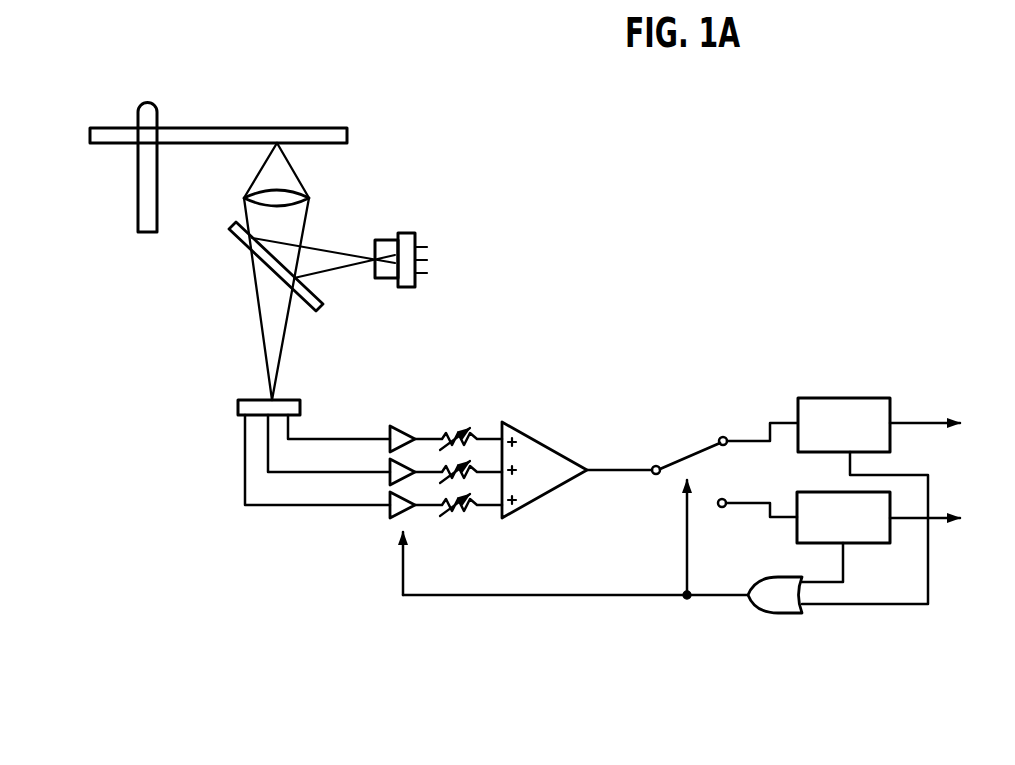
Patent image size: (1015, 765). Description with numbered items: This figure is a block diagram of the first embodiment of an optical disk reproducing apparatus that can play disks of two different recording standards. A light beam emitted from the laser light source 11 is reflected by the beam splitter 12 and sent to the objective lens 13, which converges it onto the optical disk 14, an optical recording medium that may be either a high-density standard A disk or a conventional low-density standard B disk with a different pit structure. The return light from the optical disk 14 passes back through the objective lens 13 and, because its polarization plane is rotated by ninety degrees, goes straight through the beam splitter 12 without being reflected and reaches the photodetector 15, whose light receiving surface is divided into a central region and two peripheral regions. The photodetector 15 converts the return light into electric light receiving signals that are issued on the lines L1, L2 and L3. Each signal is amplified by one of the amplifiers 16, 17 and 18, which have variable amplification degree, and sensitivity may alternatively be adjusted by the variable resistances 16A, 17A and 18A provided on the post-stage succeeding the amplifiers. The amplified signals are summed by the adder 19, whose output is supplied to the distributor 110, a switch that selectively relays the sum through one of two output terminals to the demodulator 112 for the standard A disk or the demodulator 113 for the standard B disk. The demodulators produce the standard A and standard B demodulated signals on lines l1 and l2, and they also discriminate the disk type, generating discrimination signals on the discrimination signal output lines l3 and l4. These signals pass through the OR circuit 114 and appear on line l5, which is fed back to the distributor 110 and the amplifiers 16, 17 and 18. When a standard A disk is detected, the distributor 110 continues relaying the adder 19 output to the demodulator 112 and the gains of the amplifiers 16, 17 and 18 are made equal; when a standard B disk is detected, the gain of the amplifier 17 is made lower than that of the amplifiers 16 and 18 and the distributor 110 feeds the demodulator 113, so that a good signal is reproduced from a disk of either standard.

The laser light source 11 is at (415, 240).
The beam splitter 12 is at (319, 308).
The objective lens 13 is at (309, 198).
The optical disk 14 is at (347, 132).
The photodetector 15 is at (300, 404).
The amplifier 16 is at (405, 430).
The amplifier 17 is at (402, 462).
The amplifier 18 is at (405, 513).
The variable resistance 16A is at (455, 432).
The variable resistance 17A is at (478, 482).
The variable resistance 18A is at (468, 512).
The adder 19 is at (553, 452).
The distributor (switch) 110 is at (680, 460).
The demodulator for the standard A disk 112 is at (868, 398).
The demodulator for the standard B disk 113 is at (858, 545).
The OR circuit 114 is at (780, 613).
The line L1 is at (357, 439).
The line L2 is at (325, 472).
The line L3 is at (280, 505).
The line l1 is at (930, 425).
The line l2 is at (933, 520).
The discrimination signal output line l3 is at (918, 475).
The discrimination signal output line l4 is at (812, 582).
The line l5 is at (585, 595).